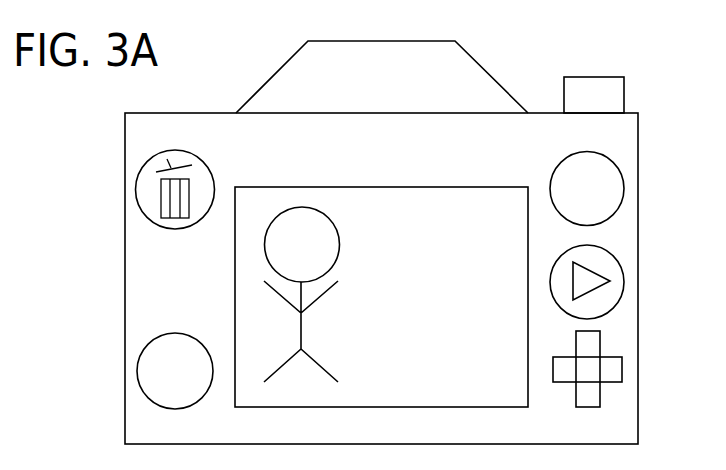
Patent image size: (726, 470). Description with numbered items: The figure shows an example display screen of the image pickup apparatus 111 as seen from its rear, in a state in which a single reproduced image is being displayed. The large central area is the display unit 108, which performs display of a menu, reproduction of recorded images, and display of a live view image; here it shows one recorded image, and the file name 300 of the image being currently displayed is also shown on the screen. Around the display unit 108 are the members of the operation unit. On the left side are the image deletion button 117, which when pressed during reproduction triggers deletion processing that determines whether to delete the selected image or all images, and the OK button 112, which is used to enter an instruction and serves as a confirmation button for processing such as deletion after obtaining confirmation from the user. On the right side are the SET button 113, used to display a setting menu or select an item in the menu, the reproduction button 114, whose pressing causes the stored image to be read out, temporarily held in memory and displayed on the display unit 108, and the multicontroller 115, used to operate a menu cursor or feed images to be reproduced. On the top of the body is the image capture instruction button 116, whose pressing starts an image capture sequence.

The image pickup apparatus 111 is at (125, 138).
The image capture instruction button 116 is at (624, 95).
The image deletion button 117 is at (135, 194).
The OK button 112 is at (137, 371).
The display unit 108 is at (447, 172).
The file name 300 is at (428, 350).
The SET button 113 is at (624, 186).
The reproduction button 114 is at (623, 280).
The multicontroller 115 is at (622, 369).